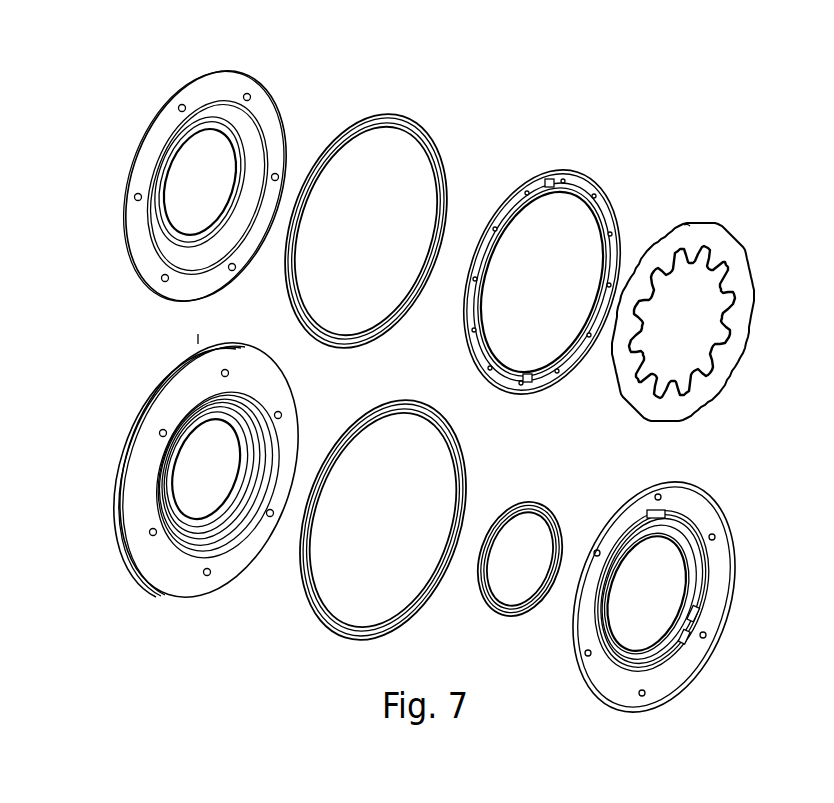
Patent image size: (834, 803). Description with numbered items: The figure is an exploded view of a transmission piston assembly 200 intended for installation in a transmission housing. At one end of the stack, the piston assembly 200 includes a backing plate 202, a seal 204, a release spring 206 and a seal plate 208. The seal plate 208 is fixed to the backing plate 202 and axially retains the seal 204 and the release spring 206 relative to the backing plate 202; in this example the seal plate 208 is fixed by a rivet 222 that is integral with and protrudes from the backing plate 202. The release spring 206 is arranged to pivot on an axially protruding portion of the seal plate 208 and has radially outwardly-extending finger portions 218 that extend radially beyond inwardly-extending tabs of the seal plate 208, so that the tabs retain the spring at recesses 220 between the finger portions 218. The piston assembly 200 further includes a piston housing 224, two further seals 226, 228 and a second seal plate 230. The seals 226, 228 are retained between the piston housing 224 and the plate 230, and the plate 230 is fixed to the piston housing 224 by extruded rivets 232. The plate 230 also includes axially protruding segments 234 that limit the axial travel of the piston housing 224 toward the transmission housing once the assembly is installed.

The transmission piston assembly 200 is at (618, 84).
The backing plate 202 is at (200, 86).
The seal 204 is at (400, 118).
The release spring 206 is at (712, 232).
The seal plate 208 is at (598, 205).
The finger portion 218 is at (741, 250).
The recess 220 is at (691, 217).
The rivet 222 is at (250, 95).
The piston housing 224 is at (178, 572).
The seal 226 is at (358, 415).
The seal 228 is at (532, 500).
The seal plate 230 is at (700, 512).
The extruded rivet 232 is at (212, 576).
The axially protruding segment 234 is at (703, 622).